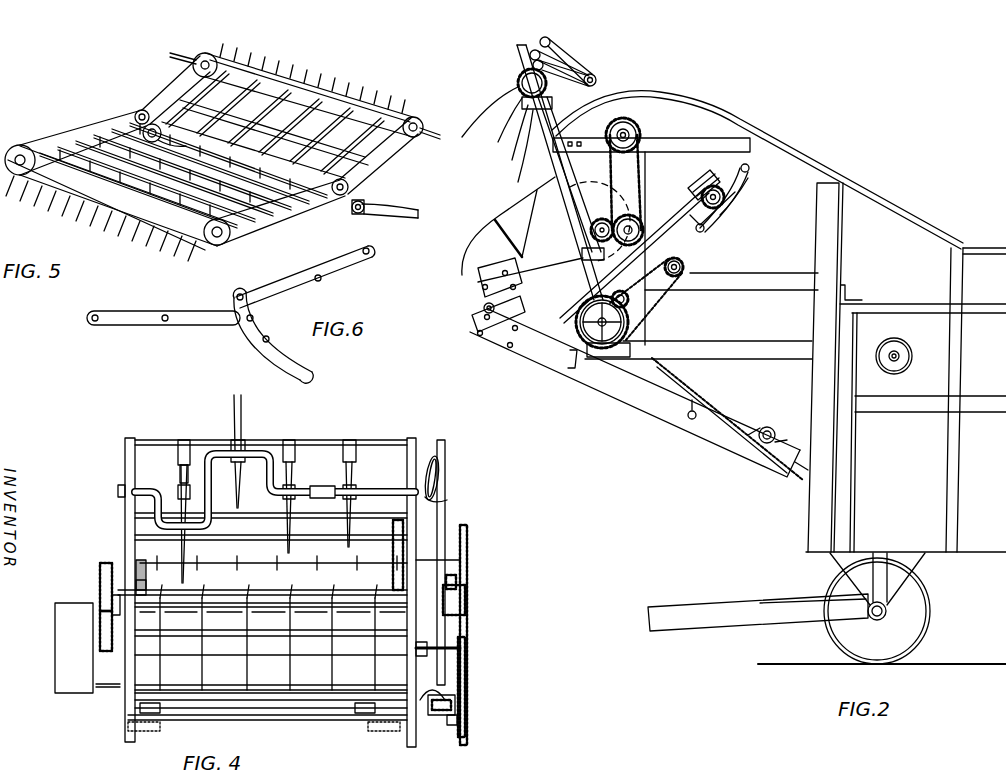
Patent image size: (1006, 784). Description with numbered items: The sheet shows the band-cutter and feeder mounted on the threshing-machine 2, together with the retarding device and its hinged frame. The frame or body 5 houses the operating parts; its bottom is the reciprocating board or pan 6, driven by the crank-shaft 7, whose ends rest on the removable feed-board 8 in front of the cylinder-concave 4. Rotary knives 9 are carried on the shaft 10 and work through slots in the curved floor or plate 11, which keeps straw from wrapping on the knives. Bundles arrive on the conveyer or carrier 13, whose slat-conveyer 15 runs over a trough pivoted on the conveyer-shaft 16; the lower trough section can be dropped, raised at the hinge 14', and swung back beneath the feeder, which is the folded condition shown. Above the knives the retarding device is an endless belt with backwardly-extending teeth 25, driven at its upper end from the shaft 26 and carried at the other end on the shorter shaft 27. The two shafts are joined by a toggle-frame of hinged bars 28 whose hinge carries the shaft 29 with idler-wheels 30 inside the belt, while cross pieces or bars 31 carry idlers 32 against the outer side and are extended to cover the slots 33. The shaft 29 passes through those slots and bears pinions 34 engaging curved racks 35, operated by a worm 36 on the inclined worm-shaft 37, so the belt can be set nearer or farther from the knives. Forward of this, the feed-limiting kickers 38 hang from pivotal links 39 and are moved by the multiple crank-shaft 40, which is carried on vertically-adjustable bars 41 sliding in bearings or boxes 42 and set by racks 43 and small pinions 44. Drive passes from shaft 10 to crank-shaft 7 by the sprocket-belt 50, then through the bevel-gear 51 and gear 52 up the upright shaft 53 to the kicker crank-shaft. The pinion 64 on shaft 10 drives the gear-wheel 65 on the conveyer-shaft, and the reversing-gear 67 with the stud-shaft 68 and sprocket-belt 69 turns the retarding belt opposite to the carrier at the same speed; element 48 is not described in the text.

In FIG. 2, the threshing-machine 2 is at (827, 423).
In FIG. 2, the cylinder-concave 4 is at (570, 364).
In FIG. 2, the frame or body 5 is at (716, 120).
In FIG. 4, the reciprocating board or pan 6 is at (282, 698).
In FIG. 4, the crank-shaft 7 is at (330, 708).
In FIG. 4, the feed-board 8 is at (152, 733).
In FIG. 4, the knives 9 is at (336, 609).
In FIG. 2, the knife shaft 10 is at (686, 268).
In FIG. 4, the knife shaft 10 is at (452, 645).
In FIG. 4, the curved floor or plate 11 is at (272, 615).
In FIG. 2, the conveyer or carrier 13 is at (634, 397).
In FIG. 2, the hinge 14' is at (508, 262).
In FIG. 2, the slat-conveyer 15 is at (762, 430).
In FIG. 2, the conveyer-shaft 16 is at (603, 216).
In FIG. 4, the conveyer-shaft 16 is at (355, 580).
In FIG. 4, the teeth 25 is at (278, 574).
In FIG. 5, the teeth 25 is at (285, 66).
In FIG. 2, the shaft 26 is at (632, 130).
In FIG. 4, the shaft 26 is at (470, 537).
In FIG. 5, the shaft 26 is at (178, 60).
In FIG. 5, the shorter shaft 27 is at (72, 200).
In FIG. 5, the hinged bars 28 is at (385, 153).
In FIG. 6, the hinged bars 28 is at (110, 318).
In FIG. 2, the shaft 29 is at (722, 200).
In FIG. 5, the shaft 29 is at (258, 176).
In FIG. 5, the idler-wheels 30 is at (135, 118).
In FIG. 5, the cross pieces or bars 31 is at (390, 215).
In FIG. 6, the cross pieces or bars 31 is at (305, 358).
In FIG. 5, the idlers 32 is at (146, 126).
In FIG. 2, the slots 33 is at (730, 180).
In FIG. 2, the pinions 34 is at (722, 228).
In FIG. 5, the pinions 34 is at (360, 214).
In FIG. 2, the curved racks 35 is at (735, 192).
In FIG. 2, the worm 36 is at (706, 190).
In FIG. 2, the worm-shaft 37 is at (634, 255).
In FIG. 2, the bars or kickers 38 is at (518, 150).
In FIG. 4, the bars or kickers 38 is at (352, 474).
In FIG. 2, the pivotal links 39 is at (566, 62).
In FIG. 4, the pivotal links 39 is at (180, 447).
In FIG. 4, the multiple crank-shaft 40 is at (322, 480).
In FIG. 2, the vertically-adjustable bars 41 is at (557, 115).
In FIG. 4, the vertically-adjustable bars 41 is at (125, 545).
In FIG. 2, the bearings or boxes 42 is at (565, 136).
In FIG. 4, the bearings or boxes 42 is at (120, 494).
In FIG. 2, the racks 43 is at (592, 282).
In FIG. 2, the small pinions 44 is at (630, 296).
In FIG. 4, the box 48 is at (88, 690).
In FIG. 2, the sprocket-belt 50 is at (640, 316).
In FIG. 4, the sprocket-belt 50 is at (470, 680).
In FIG. 4, the bevel-gear 51 is at (447, 720).
In FIG. 4, the bevel-gear 52 is at (432, 712).
In FIG. 2, the upright shaft 53 is at (558, 172).
In FIG. 4, the upright shaft 53 is at (448, 480).
In FIG. 4, the pinion 64 is at (108, 655).
In FIG. 4, the gear-wheel 65 is at (100, 575).
In FIG. 2, the reversing-gear 67 is at (590, 228).
In FIG. 4, the reversing-gear 67 is at (454, 574).
In FIG. 2, the stud-shaft 68 is at (645, 222).
In FIG. 4, the stud-shaft 68 is at (467, 605).
In FIG. 2, the sprocket-belt 69 is at (643, 172).